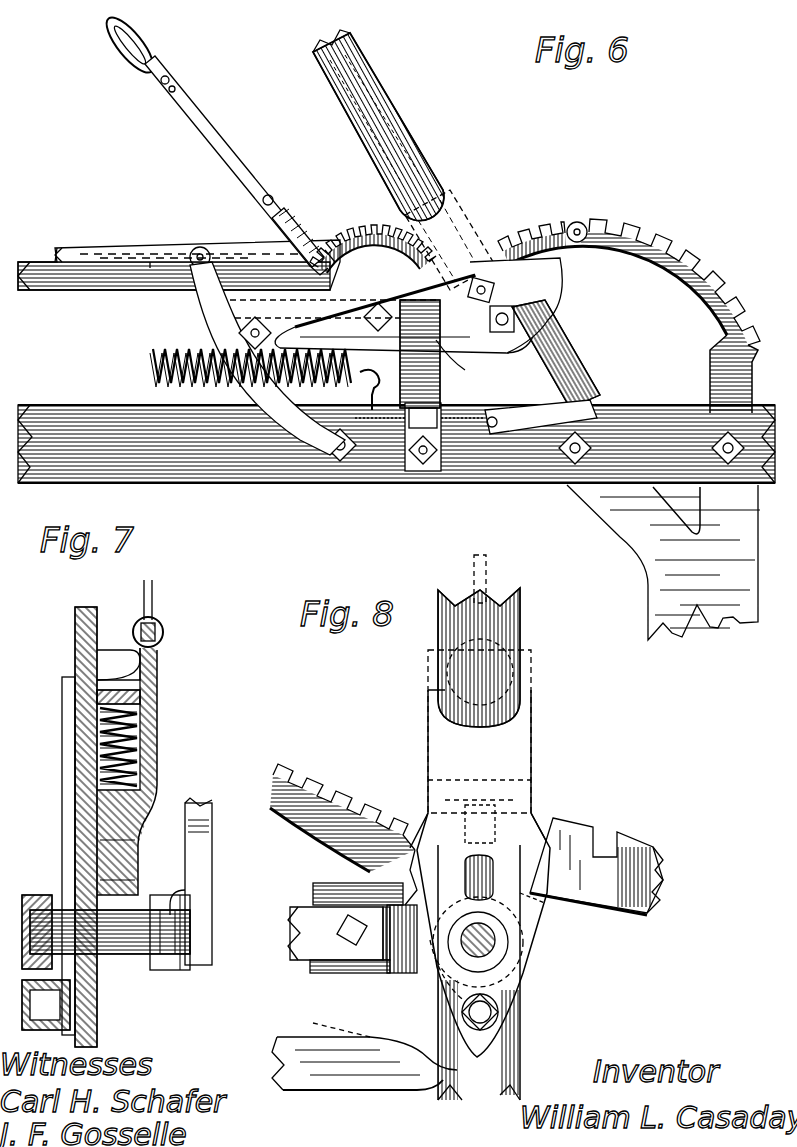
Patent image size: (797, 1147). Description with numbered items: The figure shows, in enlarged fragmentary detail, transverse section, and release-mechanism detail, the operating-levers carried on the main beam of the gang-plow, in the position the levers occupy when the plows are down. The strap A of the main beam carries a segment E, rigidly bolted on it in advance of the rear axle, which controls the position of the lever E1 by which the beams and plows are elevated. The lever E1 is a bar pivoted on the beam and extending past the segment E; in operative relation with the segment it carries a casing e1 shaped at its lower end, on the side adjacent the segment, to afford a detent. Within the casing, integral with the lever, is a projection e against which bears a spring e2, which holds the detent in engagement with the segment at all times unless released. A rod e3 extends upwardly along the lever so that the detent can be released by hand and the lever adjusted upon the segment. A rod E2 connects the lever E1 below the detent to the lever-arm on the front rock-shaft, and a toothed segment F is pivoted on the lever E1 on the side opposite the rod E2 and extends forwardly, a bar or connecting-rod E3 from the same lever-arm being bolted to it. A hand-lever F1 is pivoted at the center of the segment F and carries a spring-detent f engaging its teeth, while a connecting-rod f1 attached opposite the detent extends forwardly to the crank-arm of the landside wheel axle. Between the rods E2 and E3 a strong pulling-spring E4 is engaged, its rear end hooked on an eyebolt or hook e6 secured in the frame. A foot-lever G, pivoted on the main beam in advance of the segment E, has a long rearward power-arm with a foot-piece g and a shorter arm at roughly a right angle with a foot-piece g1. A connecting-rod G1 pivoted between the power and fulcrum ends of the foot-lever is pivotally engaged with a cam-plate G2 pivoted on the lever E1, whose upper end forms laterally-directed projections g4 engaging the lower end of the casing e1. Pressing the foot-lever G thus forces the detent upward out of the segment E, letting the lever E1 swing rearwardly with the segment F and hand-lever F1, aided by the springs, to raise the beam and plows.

In FIG. 6, the strap A is at (523, 492).
In FIG. 6, the segment E is at (690, 265).
In FIG. 7, the segment E is at (130, 892).
In FIG. 8, the segment E is at (645, 862).
In FIG. 6, the lever E1 is at (415, 150).
In FIG. 7, the lever E1 is at (95, 625).
In FIG. 8, the lever E1 is at (520, 628).
In FIG. 6, the rod E2 is at (92, 283).
In FIG. 8, the bar or connecting-rod E3 is at (290, 910).
In FIG. 6, the pulling-spring E4 is at (205, 315).
In FIG. 7, the projection e is at (118, 690).
In FIG. 7, the casing e1 is at (150, 752).
In FIG. 8, the casing e1 is at (528, 745).
In FIG. 6, the spring e2 is at (448, 208).
In FIG. 7, the spring e2 is at (150, 722).
In FIG. 7, the rod e3 is at (152, 598).
In FIG. 8, the rod e3 is at (486, 568).
In FIG. 6, the eyebolt or hook e6 is at (380, 390).
In FIG. 6, the toothed segment F is at (365, 235).
In FIG. 7, the toothed segment F is at (212, 815).
In FIG. 8, the toothed segment F is at (358, 812).
In FIG. 6, the hand-lever F1 is at (278, 198).
In FIG. 6, the spring-detent f is at (325, 250).
In FIG. 6, the connecting-rod f1 is at (150, 262).
In FIG. 6, the foot-lever G is at (512, 240).
In FIG. 6, the connecting-rod G1 is at (518, 367).
In FIG. 8, the connecting-rod G1 is at (364, 1073).
In FIG. 6, the cam-plate G2 is at (518, 305).
In FIG. 8, the cam-plate G2 is at (525, 975).
In FIG. 6, the foot-piece g is at (577, 222).
In FIG. 6, the foot-piece g1 is at (200, 247).
In FIG. 6, the laterally-directed projections g4 is at (515, 282).
In FIG. 8, the laterally-directed projections g4 is at (545, 905).